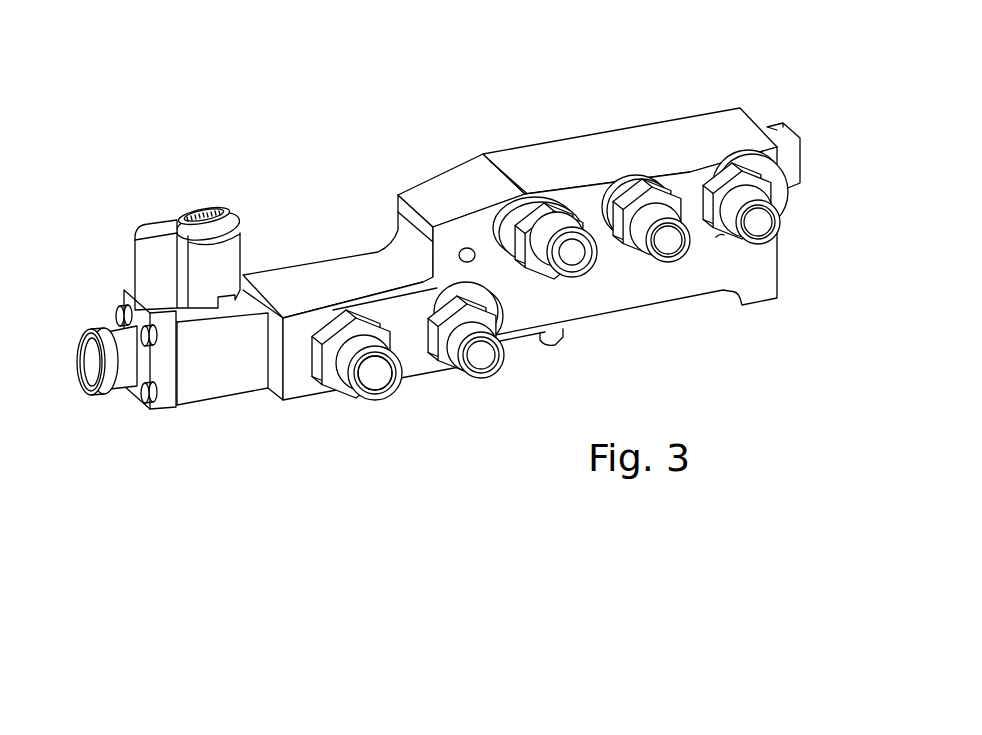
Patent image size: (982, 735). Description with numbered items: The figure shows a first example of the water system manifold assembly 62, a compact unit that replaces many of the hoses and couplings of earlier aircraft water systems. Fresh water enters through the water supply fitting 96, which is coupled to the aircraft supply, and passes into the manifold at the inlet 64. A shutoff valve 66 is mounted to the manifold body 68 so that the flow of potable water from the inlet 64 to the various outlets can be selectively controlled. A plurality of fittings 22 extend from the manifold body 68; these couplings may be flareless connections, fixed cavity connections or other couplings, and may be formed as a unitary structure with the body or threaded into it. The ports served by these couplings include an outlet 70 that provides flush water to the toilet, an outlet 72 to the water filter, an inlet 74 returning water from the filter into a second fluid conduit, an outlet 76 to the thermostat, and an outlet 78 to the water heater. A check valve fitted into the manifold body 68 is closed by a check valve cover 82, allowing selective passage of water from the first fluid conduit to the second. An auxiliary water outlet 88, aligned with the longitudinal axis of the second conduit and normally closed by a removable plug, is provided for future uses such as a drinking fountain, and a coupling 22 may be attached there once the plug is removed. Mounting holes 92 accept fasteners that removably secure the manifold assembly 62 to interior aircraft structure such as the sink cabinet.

The fittings 22 is at (758, 245).
The water system manifold assembly 62 is at (232, 429).
The inlet 64 is at (107, 330).
The shutoff valve 66 is at (197, 210).
The manifold body 68 is at (323, 260).
The outlet 70 is at (399, 392).
The outlet 72 is at (461, 379).
The inlet 74 is at (527, 214).
The outlet 76 is at (627, 193).
The outlet 78 is at (728, 168).
The check valve cover 82 is at (527, 341).
The auxiliary water outlet 88 is at (814, 154).
The mounting holes 92 is at (461, 250).
The water supply fitting 96 is at (106, 396).